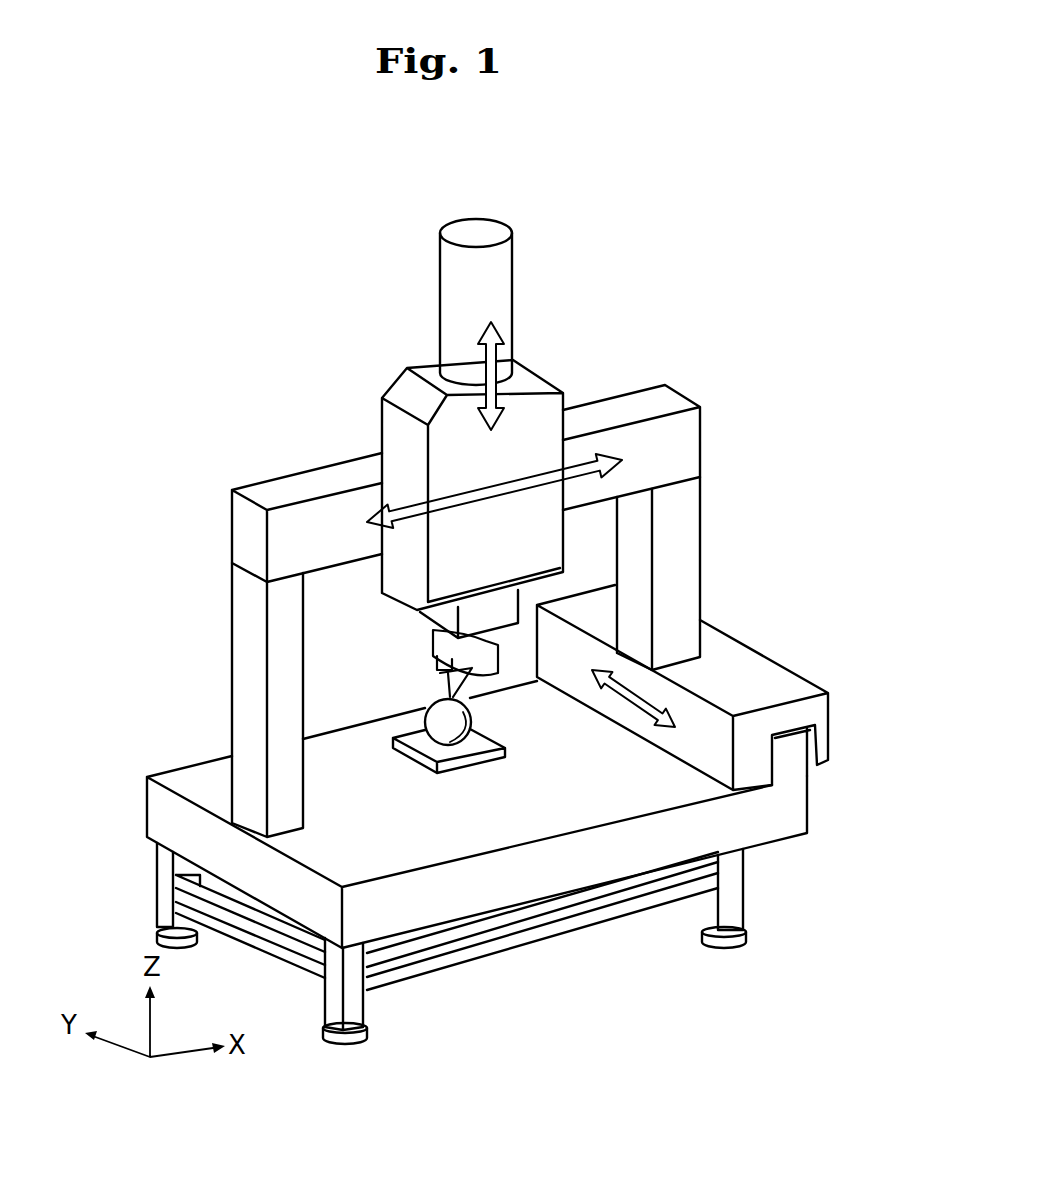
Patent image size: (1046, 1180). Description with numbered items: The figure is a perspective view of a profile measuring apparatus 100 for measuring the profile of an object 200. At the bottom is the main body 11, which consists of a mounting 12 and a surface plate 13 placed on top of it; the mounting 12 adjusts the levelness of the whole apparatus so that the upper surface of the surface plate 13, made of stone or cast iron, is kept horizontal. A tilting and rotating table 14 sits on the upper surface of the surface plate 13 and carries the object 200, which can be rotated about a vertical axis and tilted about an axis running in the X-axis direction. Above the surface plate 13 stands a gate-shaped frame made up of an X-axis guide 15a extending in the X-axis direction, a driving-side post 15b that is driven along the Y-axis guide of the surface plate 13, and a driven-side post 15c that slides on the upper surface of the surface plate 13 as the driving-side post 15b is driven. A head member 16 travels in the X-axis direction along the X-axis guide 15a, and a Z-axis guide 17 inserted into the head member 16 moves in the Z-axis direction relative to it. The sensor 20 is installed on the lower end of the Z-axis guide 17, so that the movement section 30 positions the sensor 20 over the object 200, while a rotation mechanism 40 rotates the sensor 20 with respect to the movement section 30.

The profile measuring apparatus 100 is at (727, 262).
The main body 11 is at (873, 803).
The mounting 12 is at (732, 893).
The surface plate 13 is at (792, 817).
The tilting and rotating table 14 is at (435, 752).
The X-axis guide 15a is at (302, 488).
The driving-side post 15b is at (681, 528).
The driven-side post 15c is at (243, 688).
The head member 16 is at (556, 397).
The Z-axis guide 17 is at (494, 265).
The sensor 20 is at (432, 660).
The movement section 30 is at (203, 509).
The rotation mechanism 40 is at (517, 653).
The object 200 is at (427, 712).